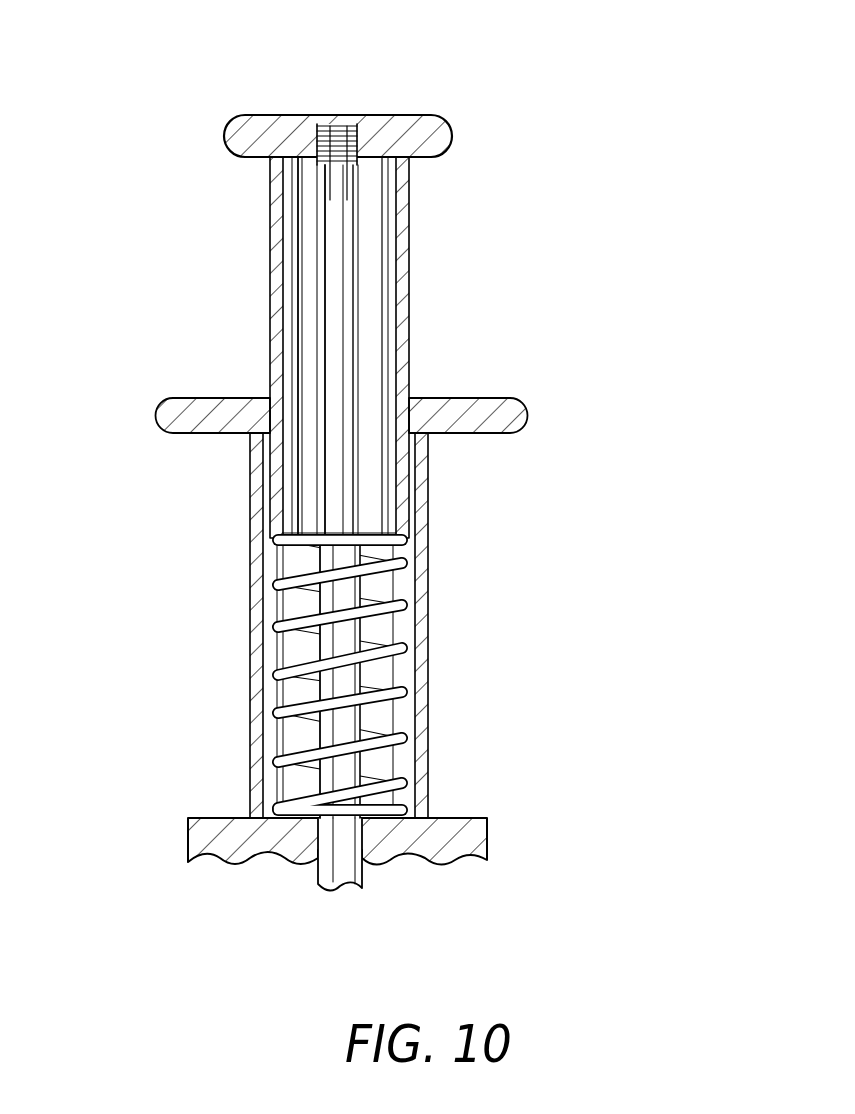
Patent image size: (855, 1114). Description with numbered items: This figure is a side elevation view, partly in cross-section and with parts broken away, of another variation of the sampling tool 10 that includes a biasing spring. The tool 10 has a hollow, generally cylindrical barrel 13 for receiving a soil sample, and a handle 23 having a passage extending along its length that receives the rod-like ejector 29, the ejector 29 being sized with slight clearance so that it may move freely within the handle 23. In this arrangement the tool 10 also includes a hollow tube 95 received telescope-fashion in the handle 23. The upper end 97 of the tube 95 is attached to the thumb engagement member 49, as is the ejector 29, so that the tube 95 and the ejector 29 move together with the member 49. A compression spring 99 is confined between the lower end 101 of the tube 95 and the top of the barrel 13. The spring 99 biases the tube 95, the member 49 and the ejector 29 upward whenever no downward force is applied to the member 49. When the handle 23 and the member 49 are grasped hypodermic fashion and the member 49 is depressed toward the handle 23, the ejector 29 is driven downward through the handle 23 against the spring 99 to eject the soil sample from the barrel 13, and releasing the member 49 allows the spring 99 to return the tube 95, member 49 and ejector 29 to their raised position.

The sampling tool 10 is at (198, 582).
The barrel 13 is at (486, 833).
The handle 23 is at (428, 617).
The ejector 29 is at (352, 360).
The thumb engagement member 49 is at (383, 115).
The hollow tube 95 is at (409, 272).
The upper end of the tube 97 is at (407, 170).
The compression spring 99 is at (340, 675).
The lower end of the tube 101 is at (405, 530).